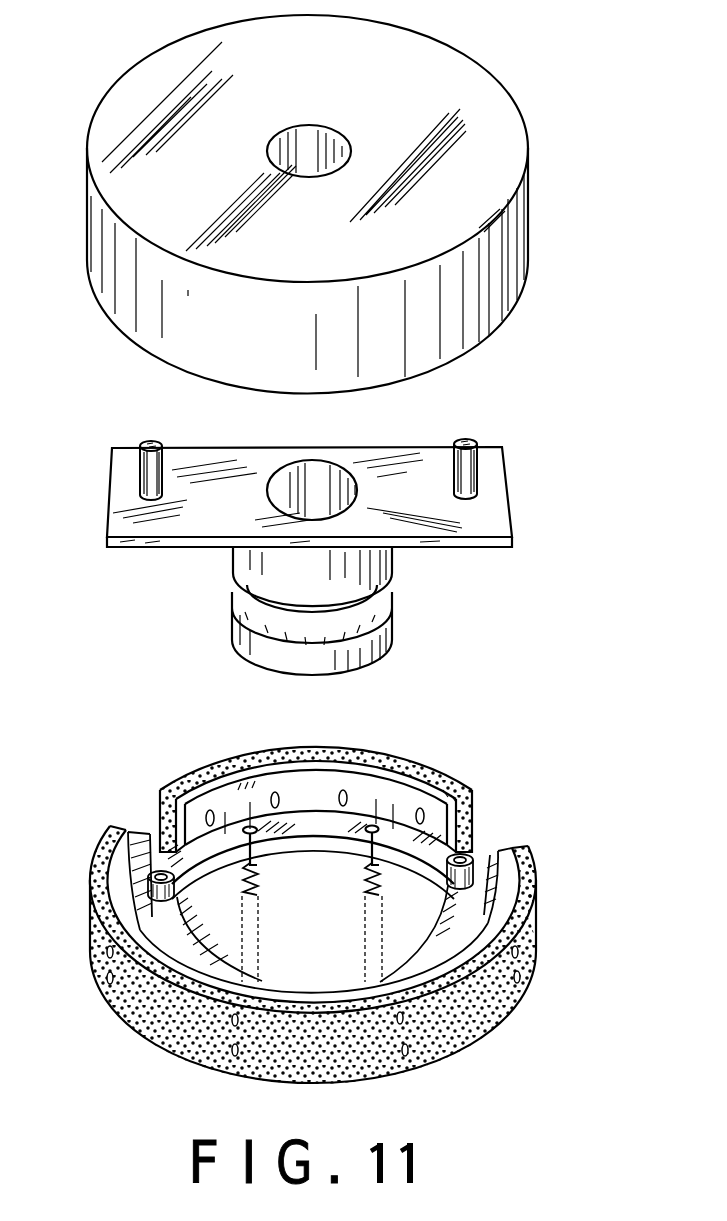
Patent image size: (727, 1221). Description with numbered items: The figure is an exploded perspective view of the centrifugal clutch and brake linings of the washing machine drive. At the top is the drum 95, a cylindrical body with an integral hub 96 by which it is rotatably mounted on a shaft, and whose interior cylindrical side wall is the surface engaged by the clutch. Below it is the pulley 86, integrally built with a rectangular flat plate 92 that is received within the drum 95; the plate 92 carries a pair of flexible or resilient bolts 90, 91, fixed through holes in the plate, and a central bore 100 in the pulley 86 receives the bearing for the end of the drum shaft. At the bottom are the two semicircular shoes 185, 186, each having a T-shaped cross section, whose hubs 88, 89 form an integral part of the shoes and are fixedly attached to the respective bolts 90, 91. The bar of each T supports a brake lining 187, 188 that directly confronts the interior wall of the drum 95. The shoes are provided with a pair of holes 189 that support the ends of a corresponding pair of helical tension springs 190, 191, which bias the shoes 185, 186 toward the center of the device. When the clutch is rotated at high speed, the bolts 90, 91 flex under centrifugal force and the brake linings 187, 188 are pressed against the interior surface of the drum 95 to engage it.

The drum 95 is at (475, 97).
The integral hub 96 is at (287, 140).
The rectangular plate 92 is at (493, 485).
The resilient bolt 90 is at (153, 463).
The resilient bolt 91 is at (467, 465).
The bore 100 is at (328, 465).
The pulley 86 is at (372, 580).
The brake lining 188 is at (430, 777).
The shoe 186 is at (303, 822).
The holes 189 is at (368, 840).
The helical tension spring 190 is at (252, 890).
The helical tension spring 191 is at (373, 892).
The hub 88 is at (174, 882).
The hub 89 is at (446, 871).
The shoe 185 is at (165, 921).
The brake lining 187 is at (268, 1065).